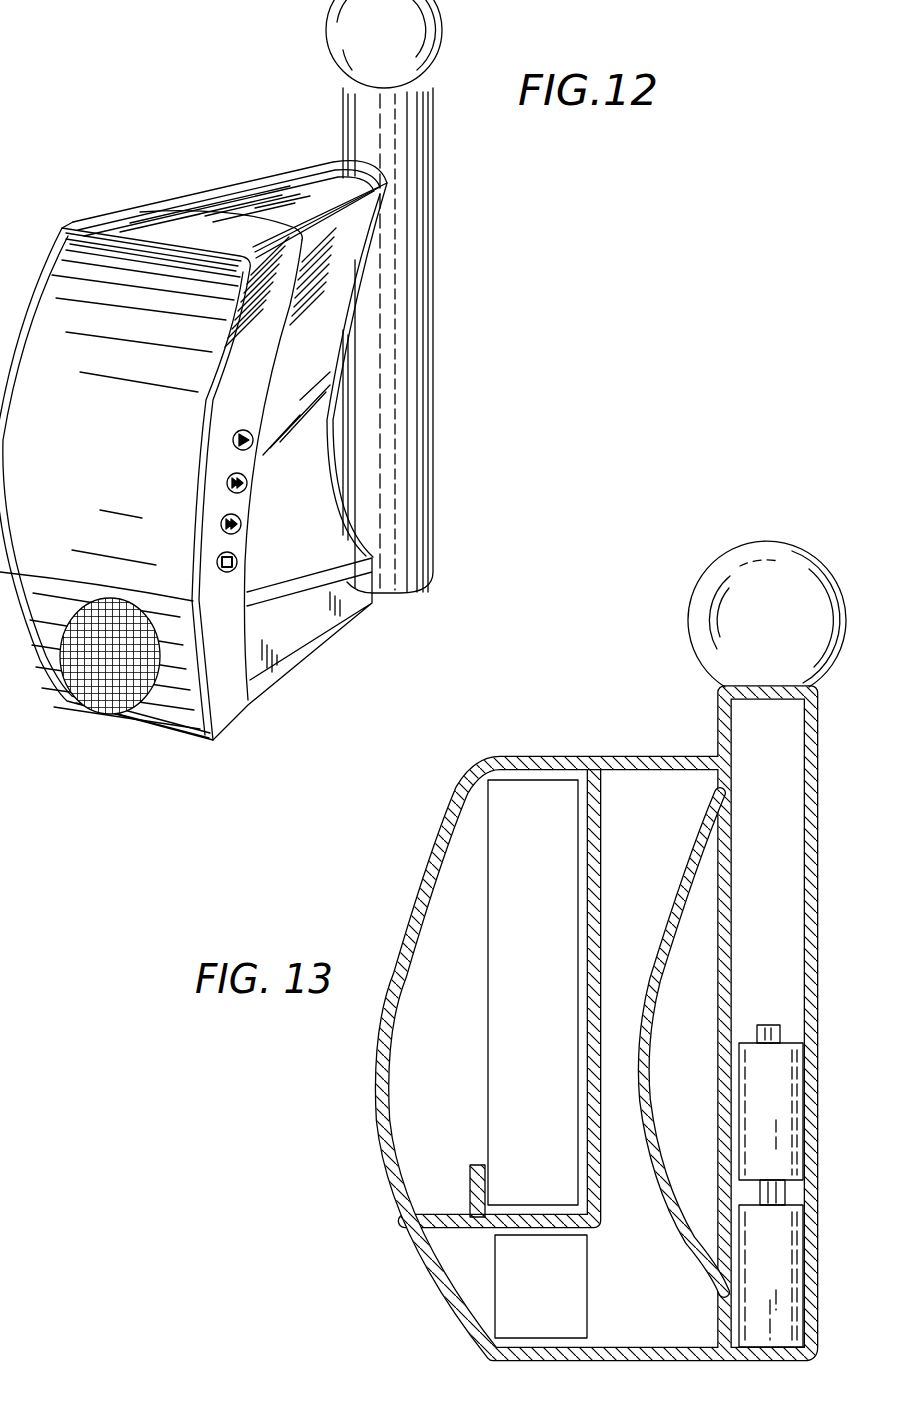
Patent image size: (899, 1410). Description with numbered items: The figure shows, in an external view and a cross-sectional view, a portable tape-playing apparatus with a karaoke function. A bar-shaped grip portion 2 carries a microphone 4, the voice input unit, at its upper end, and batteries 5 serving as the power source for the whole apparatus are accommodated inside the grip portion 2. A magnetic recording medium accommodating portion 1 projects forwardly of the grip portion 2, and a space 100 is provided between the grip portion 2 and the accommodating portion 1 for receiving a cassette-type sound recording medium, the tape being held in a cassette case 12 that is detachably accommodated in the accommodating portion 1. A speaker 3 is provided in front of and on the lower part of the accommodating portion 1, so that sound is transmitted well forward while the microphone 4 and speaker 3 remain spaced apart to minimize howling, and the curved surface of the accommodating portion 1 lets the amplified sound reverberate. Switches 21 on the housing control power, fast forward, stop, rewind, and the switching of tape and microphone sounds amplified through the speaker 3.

In FIG. 12, the magnetic recording medium accommodating portion 1 is at (88, 226).
In FIG. 12, the grip portion 2 is at (405, 412).
In FIG. 13, the grip portion 2 is at (748, 748).
In FIG. 12, the speaker 3 is at (117, 708).
In FIG. 13, the speaker 3 is at (510, 1305).
In FIG. 12, the microphone 4 is at (438, 19).
In FIG. 13, the microphone 4 is at (705, 613).
In FIG. 13, the batteries 5 is at (770, 1307).
In FIG. 13, the cassette case 12 is at (492, 1130).
In FIG. 12, the switches 21 is at (238, 580).
In FIG. 12, the space 100 is at (355, 255).
In FIG. 13, the space 100 is at (640, 762).